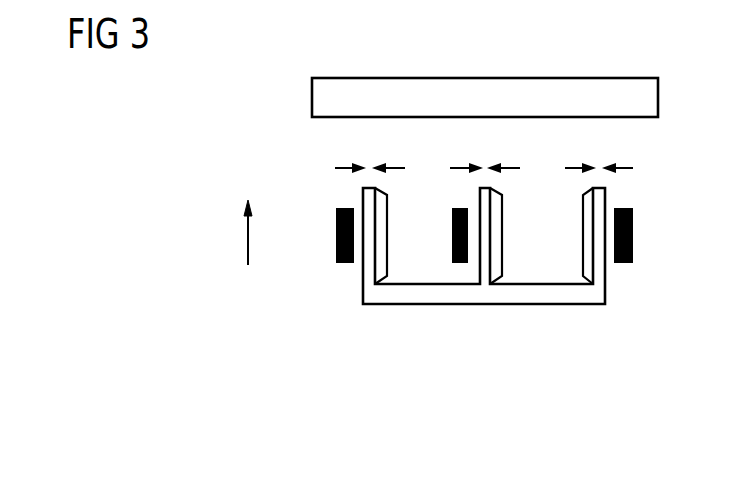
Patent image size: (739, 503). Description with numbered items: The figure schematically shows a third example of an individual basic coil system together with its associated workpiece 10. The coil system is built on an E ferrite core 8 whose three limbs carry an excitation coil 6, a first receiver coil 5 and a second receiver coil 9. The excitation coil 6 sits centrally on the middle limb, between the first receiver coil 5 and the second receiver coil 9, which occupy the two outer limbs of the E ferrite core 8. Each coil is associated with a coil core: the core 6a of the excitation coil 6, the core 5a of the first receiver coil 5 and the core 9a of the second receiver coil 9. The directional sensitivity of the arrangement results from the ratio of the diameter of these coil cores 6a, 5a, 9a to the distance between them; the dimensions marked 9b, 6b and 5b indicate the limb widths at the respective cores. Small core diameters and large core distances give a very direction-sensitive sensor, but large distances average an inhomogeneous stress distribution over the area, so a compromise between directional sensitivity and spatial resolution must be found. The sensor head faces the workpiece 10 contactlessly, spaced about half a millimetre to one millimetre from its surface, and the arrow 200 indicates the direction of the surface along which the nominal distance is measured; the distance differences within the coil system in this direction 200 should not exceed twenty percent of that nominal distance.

The workpiece 10 is at (311, 102).
The E ferrite core 8 is at (432, 304).
The second receiver coil 9 is at (336, 237).
The excitation coil 6 is at (452, 218).
The first receiver coil 5 is at (634, 230).
The coil core 9a is at (388, 223).
The coil core 6a is at (503, 223).
The coil core 5a is at (582, 223).
The first wall thickness 9b is at (370, 152).
The second wall thickness 6b is at (485, 152).
The third wall thickness 5b is at (599, 152).
The direction of the surface 200 is at (247, 243).